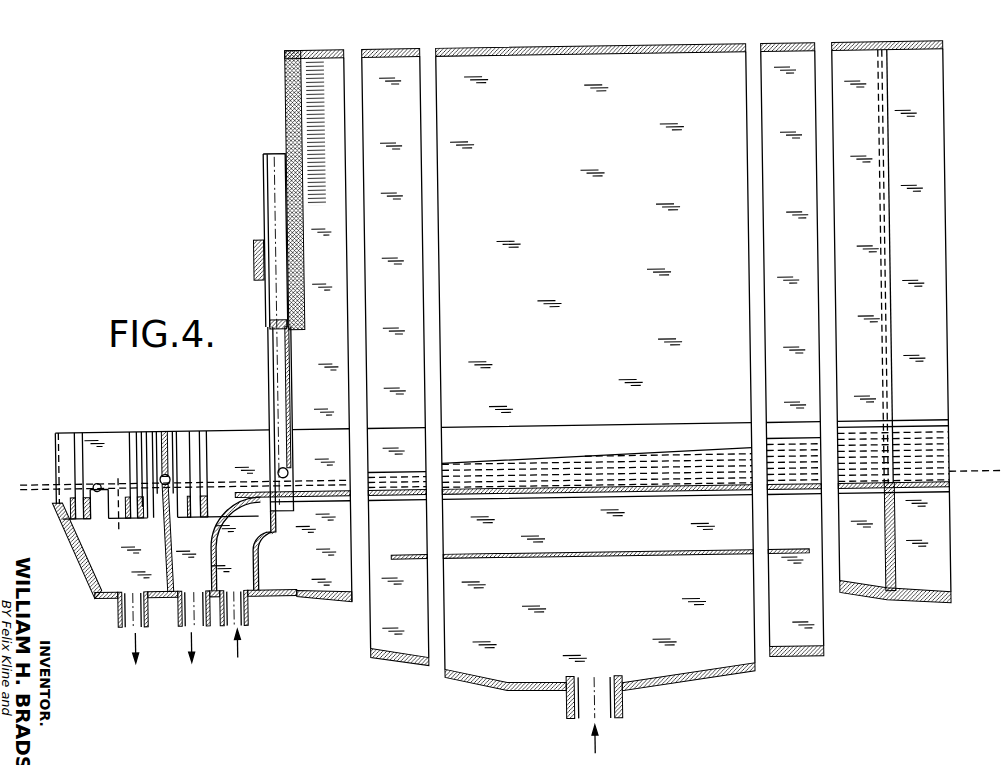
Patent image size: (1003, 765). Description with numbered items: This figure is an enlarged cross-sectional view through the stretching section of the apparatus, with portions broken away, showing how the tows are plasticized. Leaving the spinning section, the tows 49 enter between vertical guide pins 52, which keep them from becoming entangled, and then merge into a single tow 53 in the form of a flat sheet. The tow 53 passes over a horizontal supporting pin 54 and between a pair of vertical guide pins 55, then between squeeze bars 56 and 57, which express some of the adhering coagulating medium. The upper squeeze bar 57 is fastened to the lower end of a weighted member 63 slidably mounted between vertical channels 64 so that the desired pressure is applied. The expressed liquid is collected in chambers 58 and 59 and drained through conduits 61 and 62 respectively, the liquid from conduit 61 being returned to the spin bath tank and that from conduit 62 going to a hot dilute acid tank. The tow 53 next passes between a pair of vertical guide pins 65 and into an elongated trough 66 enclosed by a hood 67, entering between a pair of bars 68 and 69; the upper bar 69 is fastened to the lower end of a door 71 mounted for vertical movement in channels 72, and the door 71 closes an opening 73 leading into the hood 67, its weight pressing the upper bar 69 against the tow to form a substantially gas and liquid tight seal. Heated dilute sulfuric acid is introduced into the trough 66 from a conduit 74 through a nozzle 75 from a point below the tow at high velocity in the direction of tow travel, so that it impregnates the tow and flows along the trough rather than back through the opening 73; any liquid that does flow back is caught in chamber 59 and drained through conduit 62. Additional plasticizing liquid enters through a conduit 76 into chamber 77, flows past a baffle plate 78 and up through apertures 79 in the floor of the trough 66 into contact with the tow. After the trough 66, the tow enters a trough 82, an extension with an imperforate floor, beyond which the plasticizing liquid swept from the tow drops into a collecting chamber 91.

The tows 49 is at (28, 477).
The vertical guide pins 52 is at (80, 432).
The tow 53 is at (977, 462).
The horizontal supporting pin 54 is at (97, 476).
The vertical guide pins 55 is at (136, 425).
The squeeze bar 56 is at (165, 493).
The upper squeeze bar 57 is at (171, 470).
The chamber 58 is at (100, 562).
The chamber 59 is at (180, 569).
The conduit 61 is at (123, 611).
The conduit 62 is at (196, 614).
The weighted member 63 is at (167, 430).
The vertical channels 64 is at (174, 436).
The vertical guide pins 65 is at (201, 439).
The elongated trough 66 is at (578, 430).
The hood 67 is at (291, 105).
The bar 68 is at (282, 507).
The upper bar 69 is at (288, 472).
The door 71 is at (293, 373).
The channels 72 is at (278, 192).
The opening 73 is at (295, 328).
The conduit 74 is at (240, 613).
The nozzle 75 is at (256, 565).
The conduit 76 is at (561, 705).
The chamber 77 is at (709, 674).
The baffle plate 78 is at (597, 556).
The apertures 79 is at (598, 492).
The trough 82 is at (919, 430).
The collecting chamber 91 is at (930, 600).